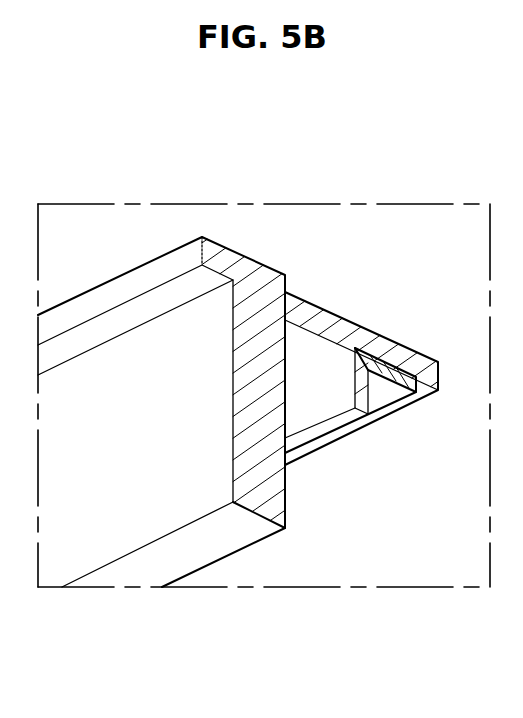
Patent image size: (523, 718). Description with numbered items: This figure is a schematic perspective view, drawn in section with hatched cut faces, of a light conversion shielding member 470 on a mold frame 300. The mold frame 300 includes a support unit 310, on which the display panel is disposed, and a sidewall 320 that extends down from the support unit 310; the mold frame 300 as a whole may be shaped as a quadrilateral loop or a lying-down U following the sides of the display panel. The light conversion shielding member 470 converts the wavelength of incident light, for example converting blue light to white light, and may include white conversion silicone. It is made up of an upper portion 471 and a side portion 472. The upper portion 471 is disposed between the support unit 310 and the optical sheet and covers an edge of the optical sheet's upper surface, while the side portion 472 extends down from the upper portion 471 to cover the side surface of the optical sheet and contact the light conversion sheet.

The mold frame 300 is at (428, 652).
The support unit 310 is at (398, 403).
The sidewall 320 is at (205, 418).
The light conversion shielding member 470 is at (328, 157).
The upper portion 471 is at (385, 387).
The side portion 472 is at (335, 387).